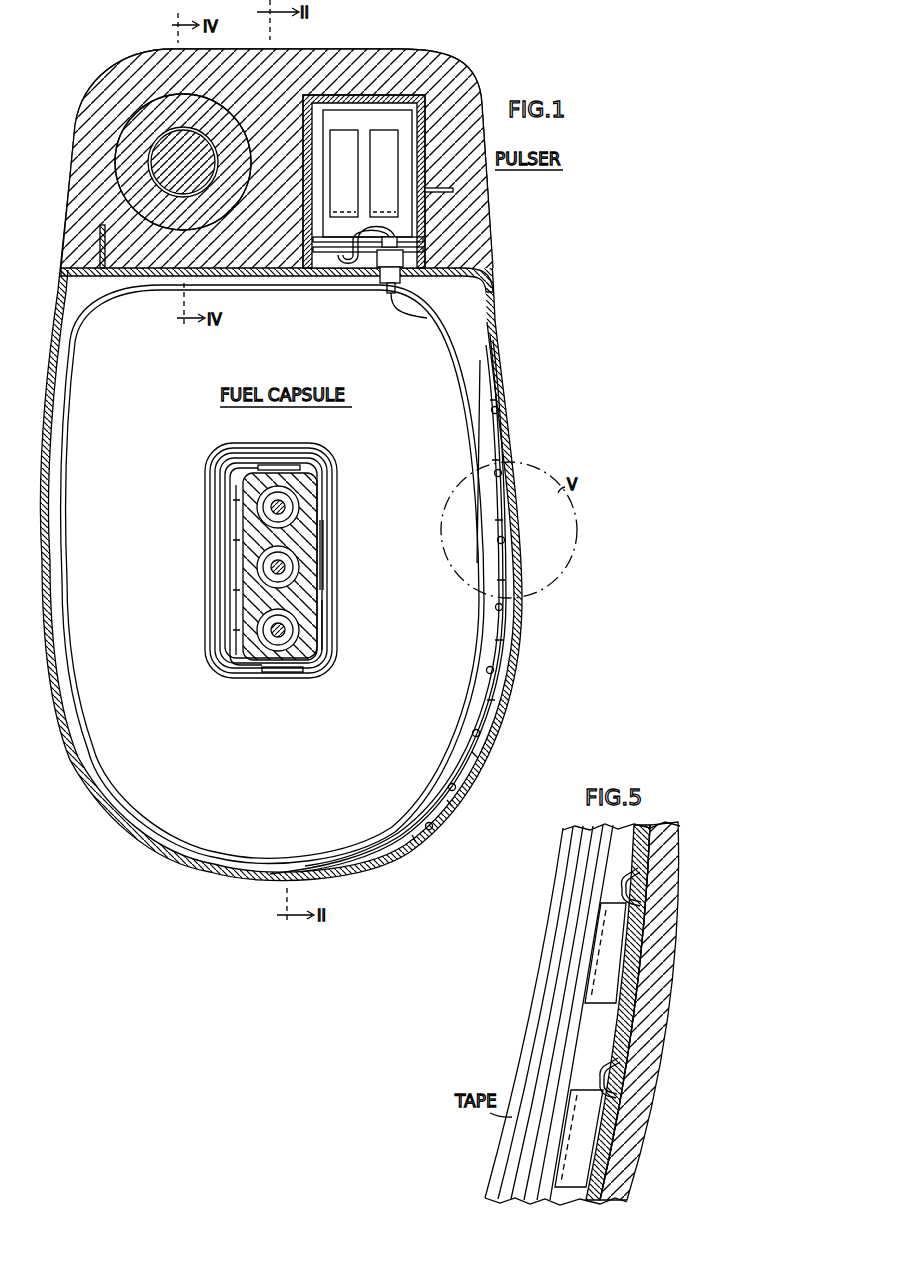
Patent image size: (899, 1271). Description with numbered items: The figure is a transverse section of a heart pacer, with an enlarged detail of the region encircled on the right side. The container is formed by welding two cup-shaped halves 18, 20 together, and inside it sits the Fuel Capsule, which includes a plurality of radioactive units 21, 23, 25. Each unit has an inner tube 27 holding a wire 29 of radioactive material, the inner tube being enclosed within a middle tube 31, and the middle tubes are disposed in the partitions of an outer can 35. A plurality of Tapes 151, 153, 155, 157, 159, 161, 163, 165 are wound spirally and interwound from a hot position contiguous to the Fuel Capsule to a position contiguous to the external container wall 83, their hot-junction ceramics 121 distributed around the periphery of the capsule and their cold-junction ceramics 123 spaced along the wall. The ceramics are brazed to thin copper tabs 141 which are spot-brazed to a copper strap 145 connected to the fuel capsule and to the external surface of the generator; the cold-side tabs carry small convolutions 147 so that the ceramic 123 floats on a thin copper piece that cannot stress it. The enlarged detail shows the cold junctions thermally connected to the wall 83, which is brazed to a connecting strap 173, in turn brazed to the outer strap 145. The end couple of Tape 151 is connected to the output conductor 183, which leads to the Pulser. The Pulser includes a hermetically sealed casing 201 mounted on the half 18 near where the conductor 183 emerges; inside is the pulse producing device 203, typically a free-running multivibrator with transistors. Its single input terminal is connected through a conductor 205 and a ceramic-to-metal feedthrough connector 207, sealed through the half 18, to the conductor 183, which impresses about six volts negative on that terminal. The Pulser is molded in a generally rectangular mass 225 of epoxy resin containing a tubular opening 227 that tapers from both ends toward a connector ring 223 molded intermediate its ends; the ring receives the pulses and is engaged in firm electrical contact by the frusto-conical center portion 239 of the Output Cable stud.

In FIG. 1, the cup-shaped half 18 is at (358, 866).
In FIG. 1, the cup-shaped half 20 is at (230, 875).
In FIG. 1, the radioactive unit 21 is at (305, 625).
In FIG. 1, the radioactive unit 23 is at (297, 557).
In FIG. 1, the radioactive unit 25 is at (280, 505).
In FIG. 1, the inner tube 27 is at (277, 647).
In FIG. 1, the wire of radioactive material 29 is at (280, 572).
In FIG. 1, the middle tube 31 is at (286, 653).
In FIG. 1, the outer can 35 is at (305, 487).
In FIG. 1, the external container wall 83 is at (50, 376).
In FIG. 5, the external container wall 83 is at (640, 1133).
In FIG. 1, the hot-junction ceramic terminal 121 is at (300, 670).
In FIG. 1, the cold-junction ceramic terminal 123 is at (497, 443).
In FIG. 5, the cold-junction ceramic terminal 123 is at (615, 946).
In FIG. 1, the copper tab 141 is at (327, 660).
In FIG. 1, the copper strap 145 is at (330, 670).
In FIG. 5, the copper strap 145 is at (640, 992).
In FIG. 5, the convolution 147 is at (605, 1085).
In FIG. 1, the Tape 151 is at (203, 563).
In FIG. 1, the Tape 153 is at (208, 587).
In FIG. 1, the Tape 155 is at (213, 603).
In FIG. 1, the Tape 157 is at (217, 617).
In FIG. 1, the Tape 159 is at (228, 633).
In FIG. 5, the Tape 159 is at (545, 1203).
In FIG. 1, the Tape 161 is at (230, 633).
In FIG. 5, the Tape 161 is at (530, 1203).
In FIG. 1, the Tape 163 is at (233, 640).
In FIG. 5, the Tape 163 is at (512, 1203).
In FIG. 1, the spacer pins 165 is at (230, 643).
In FIG. 5, the connecting strap 173 is at (647, 913).
In FIG. 1, the output conductor 183 is at (439, 322).
In FIG. 1, the hermetically sealed casing 201 is at (423, 102).
In FIG. 1, the pulse producing device 203 is at (390, 137).
In FIG. 1, the conductor 205 is at (363, 272).
In FIG. 1, the ceramic-to-metal feedthrough connector 207 is at (400, 280).
In FIG. 1, the connector ring 223 is at (128, 183).
In FIG. 1, the rectangular mass of epoxy resin 225 is at (382, 48).
In FIG. 1, the tubular opening 227 is at (132, 185).
In FIG. 1, the frusto-conical center portion 239 is at (167, 128).